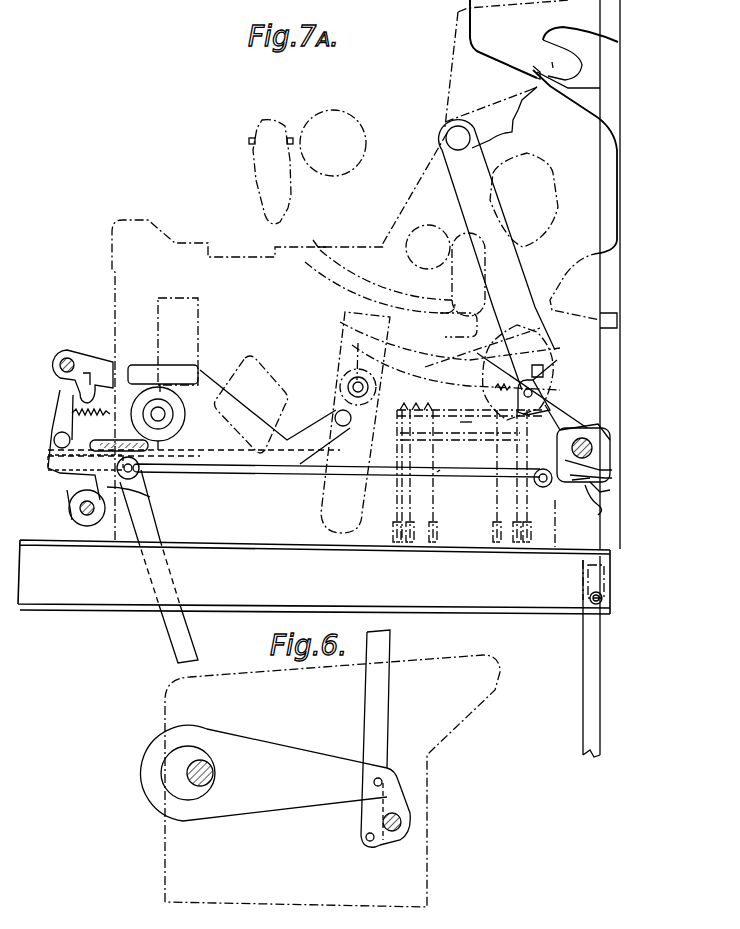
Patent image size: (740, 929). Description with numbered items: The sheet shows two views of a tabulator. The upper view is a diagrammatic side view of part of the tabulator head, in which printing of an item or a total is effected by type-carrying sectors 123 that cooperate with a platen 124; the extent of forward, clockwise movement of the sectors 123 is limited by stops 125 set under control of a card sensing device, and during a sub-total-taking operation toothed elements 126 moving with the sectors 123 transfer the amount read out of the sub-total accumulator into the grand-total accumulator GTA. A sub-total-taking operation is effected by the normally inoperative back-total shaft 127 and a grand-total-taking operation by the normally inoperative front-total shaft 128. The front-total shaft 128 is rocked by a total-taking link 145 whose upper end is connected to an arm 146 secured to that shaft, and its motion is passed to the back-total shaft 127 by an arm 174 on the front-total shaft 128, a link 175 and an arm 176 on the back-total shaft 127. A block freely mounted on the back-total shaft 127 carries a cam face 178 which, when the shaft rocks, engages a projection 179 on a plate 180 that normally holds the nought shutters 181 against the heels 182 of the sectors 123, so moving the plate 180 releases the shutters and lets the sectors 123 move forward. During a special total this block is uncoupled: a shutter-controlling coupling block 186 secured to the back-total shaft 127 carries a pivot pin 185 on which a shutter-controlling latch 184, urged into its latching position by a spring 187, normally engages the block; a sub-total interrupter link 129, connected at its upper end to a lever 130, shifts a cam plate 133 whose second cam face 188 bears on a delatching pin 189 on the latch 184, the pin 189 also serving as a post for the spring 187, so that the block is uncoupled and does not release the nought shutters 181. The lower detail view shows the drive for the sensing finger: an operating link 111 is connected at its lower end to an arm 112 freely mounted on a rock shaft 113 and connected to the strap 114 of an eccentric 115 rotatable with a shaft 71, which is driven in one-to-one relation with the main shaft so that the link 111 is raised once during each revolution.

In FIG. 7A, the type-carrying sectors 123 is at (268, 120).
In FIG. 7A, the platen 124 is at (332, 120).
In FIG. 7A, the toothed elements 126 is at (527, 340).
In FIG. 7A, the heels 182 is at (523, 380).
In FIG. 7A, the plate 180 is at (540, 372).
In FIG. 7A, the cam face 178 is at (548, 392).
In FIG. 7A, the shutter-controlling coupling block 186 is at (555, 412).
In FIG. 7A, the back-total shaft 127 is at (592, 438).
In FIG. 7A, the pivot pin 185 is at (598, 452).
In FIG. 7A, the arm 176 is at (600, 458).
In FIG. 7A, the cam plate 133 is at (610, 466).
In FIG. 7A, the second cam face 188 is at (612, 476).
In FIG. 7A, the delatching pin 189 is at (608, 490).
In FIG. 7A, the shutter-controlling latch 184 is at (600, 510).
In FIG. 7A, the projection 179 is at (543, 487).
In FIG. 7A, the spring 187 is at (575, 480).
In FIG. 7A, the nought shutters 181 is at (470, 422).
In FIG. 7A, the stops 125 is at (437, 472).
In FIG. 7A, the link 175 is at (217, 473).
In FIG. 7A, the grand-total accumulator GTA is at (345, 378).
In FIG. 7A, the arm 146 is at (130, 480).
In FIG. 7A, the total-taking link 145 is at (163, 622).
In FIG. 7A, the arm 174 is at (57, 482).
In FIG. 7A, the front-total shaft 128 is at (80, 514).
In FIG. 7A, the lever 130 is at (605, 592).
In FIG. 7A, the sub-total interrupter link 129 is at (597, 633).
In FIG. 6, the strap 114 is at (268, 745).
In FIG. 6, the eccentric 115 is at (197, 748).
In FIG. 6, the shaft 71 is at (213, 768).
In FIG. 6, the operating link 111 is at (368, 707).
In FIG. 6, the arm 112 is at (385, 845).
In FIG. 6, the rock shaft 113 is at (400, 840).